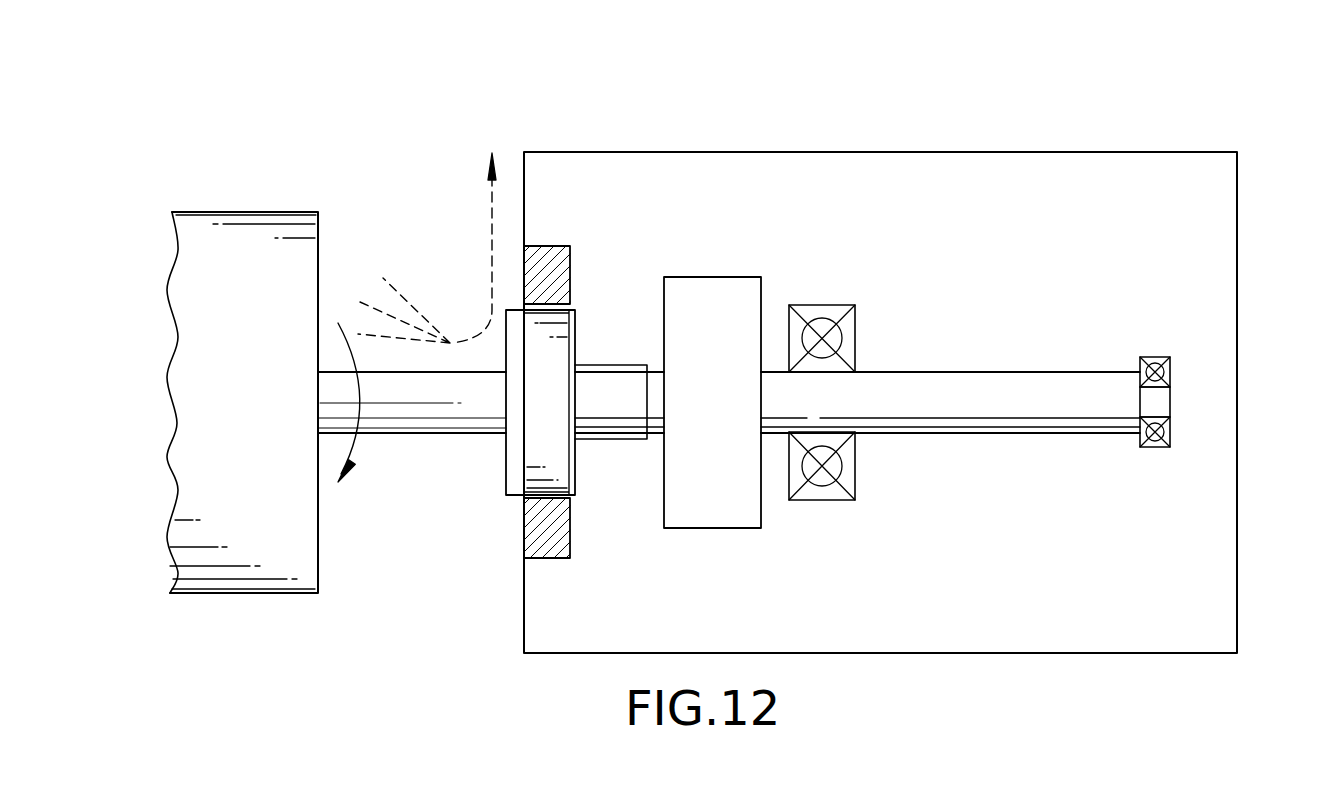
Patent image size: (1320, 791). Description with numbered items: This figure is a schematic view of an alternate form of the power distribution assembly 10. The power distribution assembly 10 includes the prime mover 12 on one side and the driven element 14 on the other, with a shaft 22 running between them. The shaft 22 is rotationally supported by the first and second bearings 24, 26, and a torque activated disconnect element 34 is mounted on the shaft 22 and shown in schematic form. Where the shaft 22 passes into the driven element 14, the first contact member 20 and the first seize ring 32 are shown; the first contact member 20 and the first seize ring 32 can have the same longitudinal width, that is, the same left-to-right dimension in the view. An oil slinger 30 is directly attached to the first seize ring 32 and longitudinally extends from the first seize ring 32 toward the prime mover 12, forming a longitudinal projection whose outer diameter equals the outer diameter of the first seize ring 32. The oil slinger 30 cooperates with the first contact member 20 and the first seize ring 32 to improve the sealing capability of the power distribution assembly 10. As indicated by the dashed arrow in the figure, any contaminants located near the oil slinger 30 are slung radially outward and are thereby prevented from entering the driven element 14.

The power distribution assembly 10 is at (522, 108).
The prime mover 12 is at (185, 182).
The driven element 14 is at (1199, 106).
The first contact member 20 is at (550, 555).
The shaft 22 is at (440, 410).
The first bearing 24 is at (1157, 360).
The second bearing 26 is at (823, 313).
The oil slinger 30 is at (513, 337).
The first seize ring 32 is at (545, 453).
The torque activated disconnect element 34 is at (723, 293).